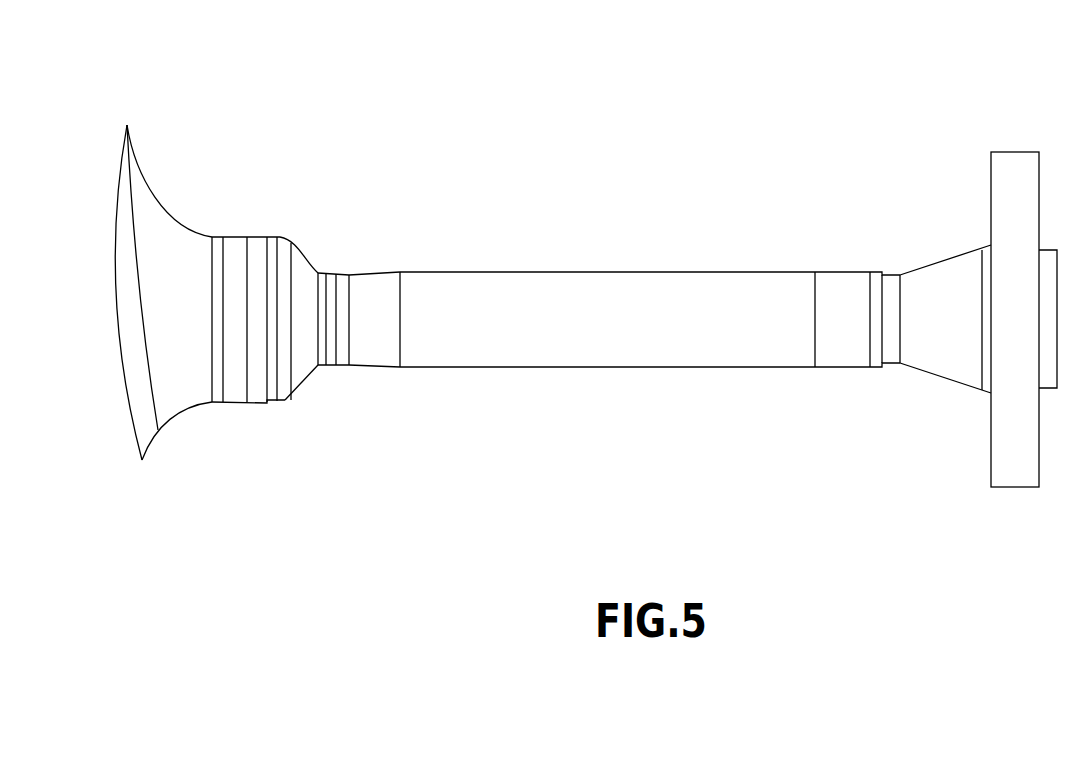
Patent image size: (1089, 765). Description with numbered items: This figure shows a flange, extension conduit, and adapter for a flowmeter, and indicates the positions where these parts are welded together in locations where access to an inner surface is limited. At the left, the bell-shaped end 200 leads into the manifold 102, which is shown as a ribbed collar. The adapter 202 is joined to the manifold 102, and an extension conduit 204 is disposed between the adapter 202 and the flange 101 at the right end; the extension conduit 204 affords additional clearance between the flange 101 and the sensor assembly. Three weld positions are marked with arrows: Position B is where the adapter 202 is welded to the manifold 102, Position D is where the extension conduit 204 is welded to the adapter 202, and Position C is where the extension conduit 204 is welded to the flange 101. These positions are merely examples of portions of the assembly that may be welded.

The bell 200 is at (162, 232).
The manifold 102 is at (233, 242).
The adapter 202 is at (302, 267).
The extension conduit 204 is at (601, 287).
The flange 101 is at (1013, 163).
The Position B is at (273, 420).
The Position D is at (337, 390).
The Position C is at (886, 390).